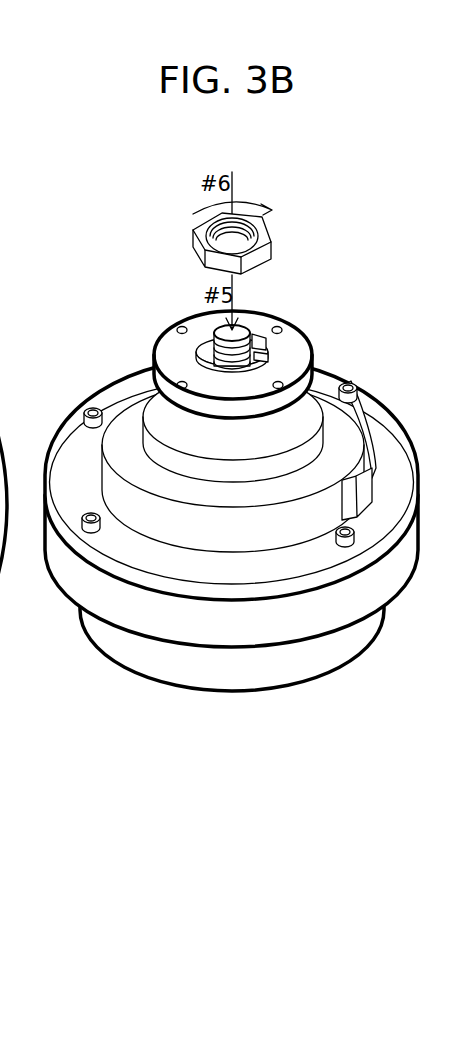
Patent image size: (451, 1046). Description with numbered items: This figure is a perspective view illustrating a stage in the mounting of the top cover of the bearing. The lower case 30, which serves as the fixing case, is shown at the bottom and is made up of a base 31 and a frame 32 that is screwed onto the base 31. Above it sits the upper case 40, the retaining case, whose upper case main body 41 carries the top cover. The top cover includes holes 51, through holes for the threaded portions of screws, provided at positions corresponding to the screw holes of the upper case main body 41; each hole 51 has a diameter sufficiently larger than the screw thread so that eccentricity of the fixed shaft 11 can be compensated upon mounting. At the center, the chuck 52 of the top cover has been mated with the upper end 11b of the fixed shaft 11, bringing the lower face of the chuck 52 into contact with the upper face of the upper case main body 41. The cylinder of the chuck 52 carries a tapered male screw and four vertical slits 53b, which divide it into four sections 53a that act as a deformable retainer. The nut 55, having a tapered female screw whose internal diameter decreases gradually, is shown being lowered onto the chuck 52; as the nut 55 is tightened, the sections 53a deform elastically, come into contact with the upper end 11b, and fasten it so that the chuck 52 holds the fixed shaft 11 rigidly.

The upper case 40 is at (78, 254).
The lower case 30 is at (207, 781).
The base 31 is at (234, 679).
The frame 32 is at (156, 620).
The upper case main body 41 is at (122, 404).
The hole 51 is at (165, 328).
The chuck 52 is at (187, 361).
The sections 53a is at (292, 344).
The slits 53b is at (270, 360).
The fixed shaft 11 is at (245, 330).
The upper end 11b is at (258, 330).
The nut 55 is at (268, 232).